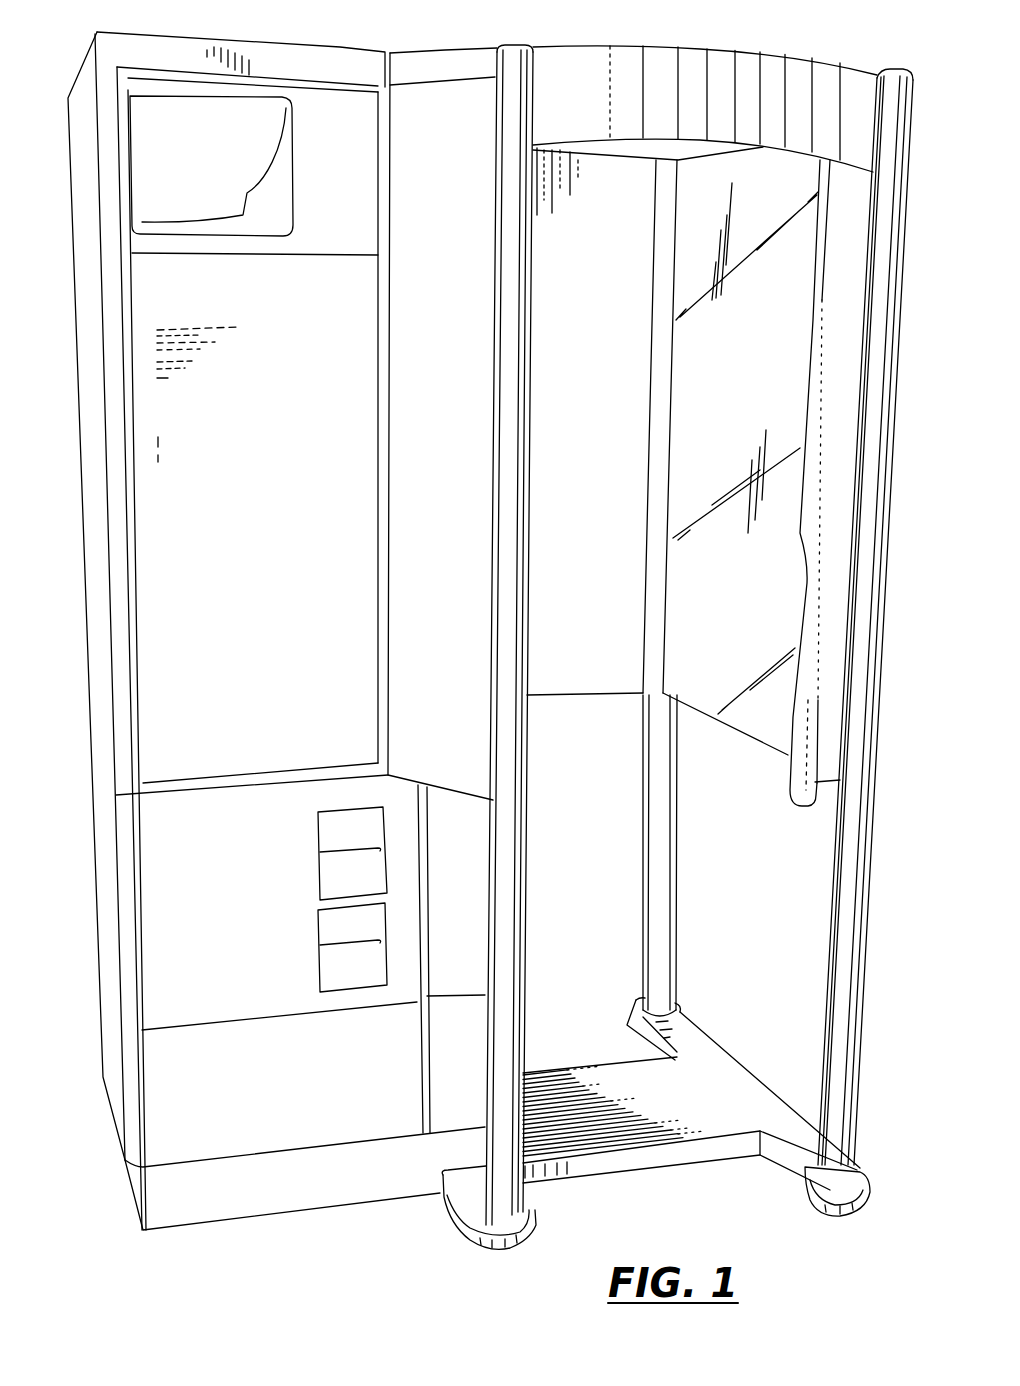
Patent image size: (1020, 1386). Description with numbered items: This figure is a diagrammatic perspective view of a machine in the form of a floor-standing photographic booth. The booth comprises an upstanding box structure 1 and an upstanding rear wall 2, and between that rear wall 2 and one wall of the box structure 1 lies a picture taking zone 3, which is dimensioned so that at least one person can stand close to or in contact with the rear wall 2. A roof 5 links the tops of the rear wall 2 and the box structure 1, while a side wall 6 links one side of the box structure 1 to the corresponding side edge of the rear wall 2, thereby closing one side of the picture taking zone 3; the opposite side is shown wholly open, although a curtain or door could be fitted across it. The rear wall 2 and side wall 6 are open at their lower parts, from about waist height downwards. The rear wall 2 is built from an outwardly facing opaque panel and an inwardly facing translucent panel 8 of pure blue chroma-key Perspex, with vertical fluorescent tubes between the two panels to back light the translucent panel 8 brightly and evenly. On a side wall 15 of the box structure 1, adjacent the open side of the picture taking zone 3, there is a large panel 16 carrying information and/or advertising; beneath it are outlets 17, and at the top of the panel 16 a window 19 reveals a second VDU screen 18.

The box structure 1 is at (83, 728).
The rear wall 2 is at (878, 767).
The picture taking zone 3 is at (615, 195).
The roof 5 is at (795, 85).
The side wall 6 is at (574, 672).
The translucent panel 8 is at (773, 725).
The side wall 15 is at (116, 440).
The panel 16 is at (157, 548).
The outlets 17 is at (317, 882).
The second VDU screen 18 is at (175, 212).
The window 19 is at (307, 120).